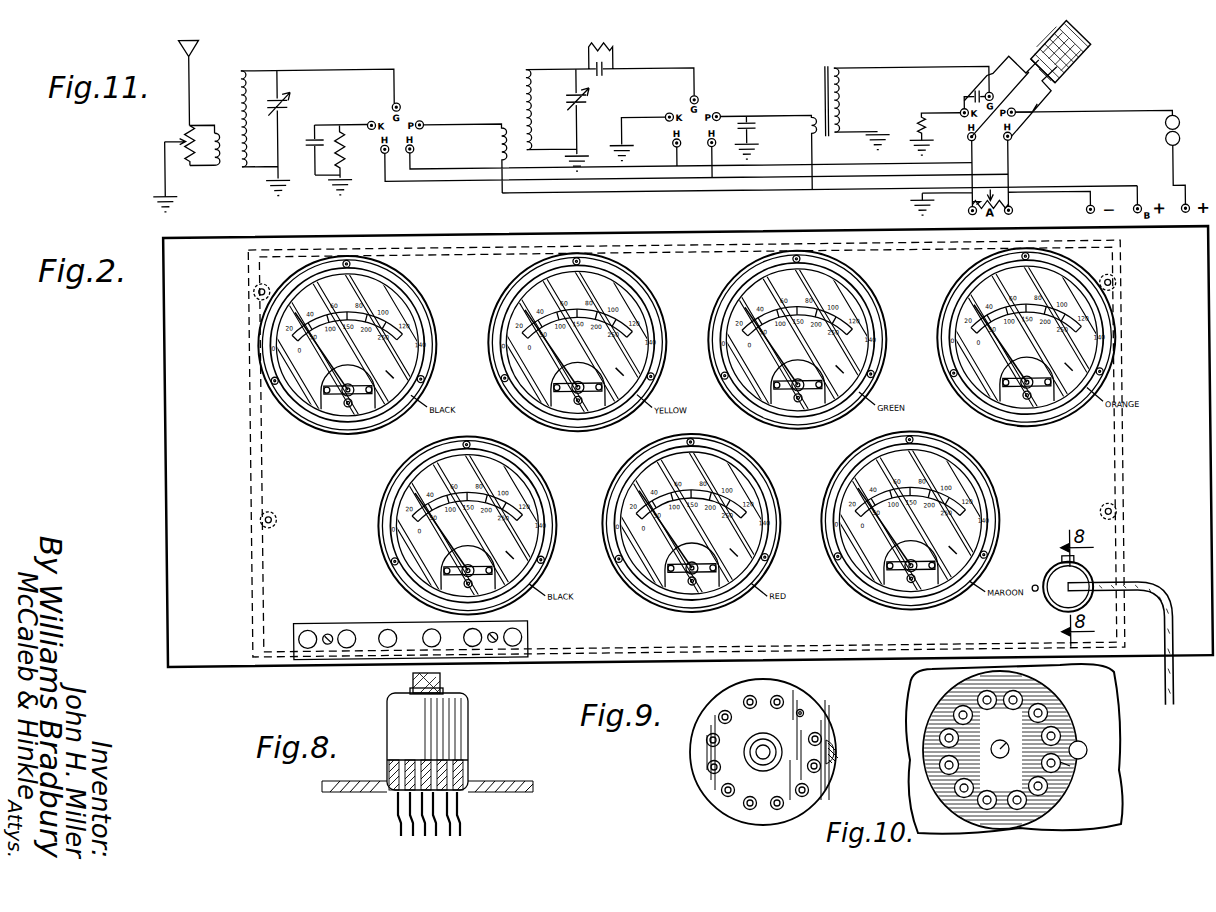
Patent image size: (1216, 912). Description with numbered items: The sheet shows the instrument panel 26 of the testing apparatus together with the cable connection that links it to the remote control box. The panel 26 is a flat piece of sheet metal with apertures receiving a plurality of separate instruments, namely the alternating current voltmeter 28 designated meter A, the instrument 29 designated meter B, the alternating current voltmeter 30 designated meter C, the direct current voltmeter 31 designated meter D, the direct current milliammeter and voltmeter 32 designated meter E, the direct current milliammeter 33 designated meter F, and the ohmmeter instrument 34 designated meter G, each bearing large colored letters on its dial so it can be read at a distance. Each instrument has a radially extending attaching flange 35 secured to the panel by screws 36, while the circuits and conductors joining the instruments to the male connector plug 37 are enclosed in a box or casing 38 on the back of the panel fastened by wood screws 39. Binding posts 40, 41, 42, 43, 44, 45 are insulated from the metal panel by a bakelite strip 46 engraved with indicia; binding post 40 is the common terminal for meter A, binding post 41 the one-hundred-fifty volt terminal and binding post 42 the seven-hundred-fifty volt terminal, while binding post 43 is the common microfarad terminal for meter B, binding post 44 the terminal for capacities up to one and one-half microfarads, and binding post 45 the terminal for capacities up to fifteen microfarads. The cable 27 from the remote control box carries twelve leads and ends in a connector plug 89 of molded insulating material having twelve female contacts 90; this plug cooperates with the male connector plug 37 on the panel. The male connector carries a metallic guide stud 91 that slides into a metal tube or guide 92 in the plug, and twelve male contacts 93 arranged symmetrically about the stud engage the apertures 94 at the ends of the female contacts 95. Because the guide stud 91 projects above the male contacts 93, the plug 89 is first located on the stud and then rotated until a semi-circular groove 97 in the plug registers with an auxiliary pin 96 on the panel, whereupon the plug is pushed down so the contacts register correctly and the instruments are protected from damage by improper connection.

In FIG. 2, the instrument panel 26 is at (700, 264).
In FIG. 8, the instrument panel 26 is at (330, 791).
In FIG. 10, the instrument panel 26 is at (1112, 809).
In FIG. 2, the cable 27 is at (1150, 602).
In FIG. 8, the cable 27 is at (427, 692).
In FIG. 2, the alternating current voltmeter 28 is at (412, 313).
In FIG. 2, the instrument 29 is at (533, 492).
In FIG. 2, the alternating current voltmeter 30 is at (604, 277).
In FIG. 2, the direct current voltmeter 31 is at (716, 462).
In FIG. 2, the direct current milliammeter and voltmeter 32 is at (812, 279).
In FIG. 2, the direct current milliammeter 33 is at (975, 507).
In FIG. 2, the ohmmeter instrument 34 is at (1100, 322).
In FIG. 2, the attaching flange 35 is at (688, 408).
In FIG. 2, the screws 36 is at (687, 407).
In FIG. 10, the male connector plug 37 is at (1063, 716).
In FIG. 2, the box or casing 38 is at (262, 312).
In FIG. 2, the wood screws 39 is at (682, 387).
In FIG. 2, the binding post 40 is at (308, 650).
In FIG. 2, the binding post 41 is at (347, 650).
In FIG. 2, the binding post 42 is at (388, 650).
In FIG. 2, the binding post 43 is at (432, 650).
In FIG. 2, the binding post 44 is at (473, 650).
In FIG. 2, the binding post 45 is at (513, 650).
In FIG. 2, the bakelite strip 46 is at (529, 643).
In FIG. 2, the connector plug 89 is at (1082, 586).
In FIG. 8, the connector plug 89 is at (455, 723).
In FIG. 9, the connector plug 89 is at (810, 722).
In FIG. 8, the female contacts 90 is at (467, 762).
In FIG. 10, the guide stud 91 is at (1007, 737).
In FIG. 9, the metal tube or guide 92 is at (771, 742).
In FIG. 10, the male contacts 93 is at (979, 741).
In FIG. 9, the apertures 94 is at (762, 740).
In FIG. 9, the female contacts 95 is at (801, 709).
In FIG. 10, the auxiliary pin 96 is at (1084, 748).
In FIG. 9, the semi-circular groove 97 is at (840, 752).
In FIG. 10, the semi-circular groove 97 is at (1062, 762).